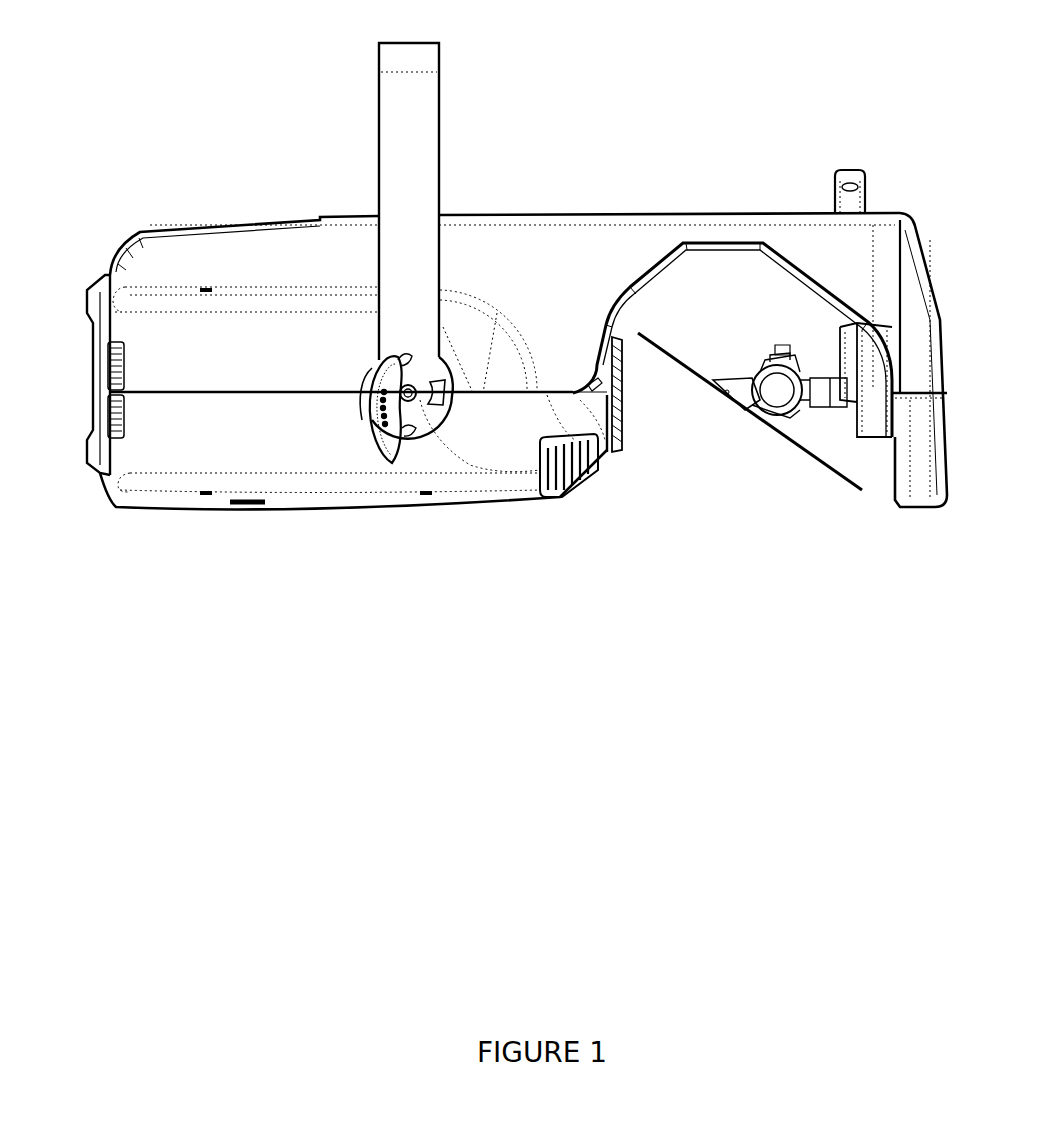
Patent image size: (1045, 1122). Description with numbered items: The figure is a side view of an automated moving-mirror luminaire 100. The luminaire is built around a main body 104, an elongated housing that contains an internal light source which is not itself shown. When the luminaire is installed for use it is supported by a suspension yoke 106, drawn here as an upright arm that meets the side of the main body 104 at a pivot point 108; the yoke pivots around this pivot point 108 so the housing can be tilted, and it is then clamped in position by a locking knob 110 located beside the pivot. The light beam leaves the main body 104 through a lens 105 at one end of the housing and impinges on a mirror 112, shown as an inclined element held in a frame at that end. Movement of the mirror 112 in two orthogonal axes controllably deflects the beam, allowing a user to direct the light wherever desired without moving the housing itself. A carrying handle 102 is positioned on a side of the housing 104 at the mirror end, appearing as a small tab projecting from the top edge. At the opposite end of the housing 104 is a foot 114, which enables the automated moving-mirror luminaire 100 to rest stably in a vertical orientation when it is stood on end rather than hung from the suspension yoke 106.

The automated moving-mirror luminaire 100 is at (611, 177).
The carrying handle 102 is at (848, 178).
The main body 104 is at (265, 263).
The lens 105 is at (623, 393).
The suspension yoke 106 is at (405, 140).
The pivot point 108 is at (415, 400).
The locking knob 110 is at (387, 447).
The mirror 112 is at (815, 458).
The foot 114 is at (97, 292).